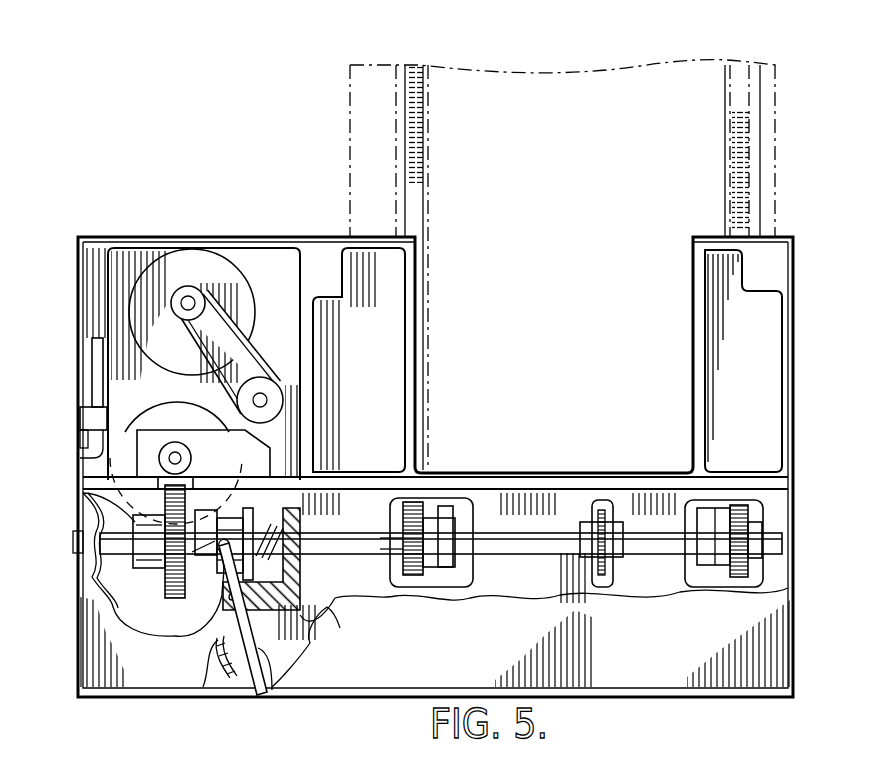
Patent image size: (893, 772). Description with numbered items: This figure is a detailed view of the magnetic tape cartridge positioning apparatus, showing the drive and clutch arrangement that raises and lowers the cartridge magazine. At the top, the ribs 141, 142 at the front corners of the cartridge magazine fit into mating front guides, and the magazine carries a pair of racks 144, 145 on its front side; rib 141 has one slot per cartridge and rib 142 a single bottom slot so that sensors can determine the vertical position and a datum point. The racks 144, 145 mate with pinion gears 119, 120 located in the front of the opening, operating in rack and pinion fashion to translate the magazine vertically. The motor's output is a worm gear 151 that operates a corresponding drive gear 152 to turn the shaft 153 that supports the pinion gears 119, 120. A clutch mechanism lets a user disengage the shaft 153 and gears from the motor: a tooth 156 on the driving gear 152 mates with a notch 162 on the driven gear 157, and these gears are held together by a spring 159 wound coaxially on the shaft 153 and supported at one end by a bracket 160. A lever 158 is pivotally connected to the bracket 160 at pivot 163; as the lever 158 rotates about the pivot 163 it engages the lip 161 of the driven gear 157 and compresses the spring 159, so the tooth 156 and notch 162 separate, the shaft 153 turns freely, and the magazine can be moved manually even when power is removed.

The pinion gear 119 is at (738, 577).
The pinion gear 120 is at (417, 577).
The rib 141 is at (772, 187).
The rib 142 is at (396, 167).
The rack 144 is at (725, 188).
The rack 145 is at (430, 180).
The worm gear 151 is at (167, 445).
The drive gear 152 is at (82, 465).
The shaft 153 is at (545, 541).
The tooth 156 is at (187, 596).
The driven gear 157 is at (236, 462).
The lever 158 is at (270, 690).
The spring 159 is at (252, 508).
The bracket 160 is at (305, 600).
The lip 161 is at (262, 528).
The notch 162 is at (208, 565).
The pivot 163 is at (216, 690).